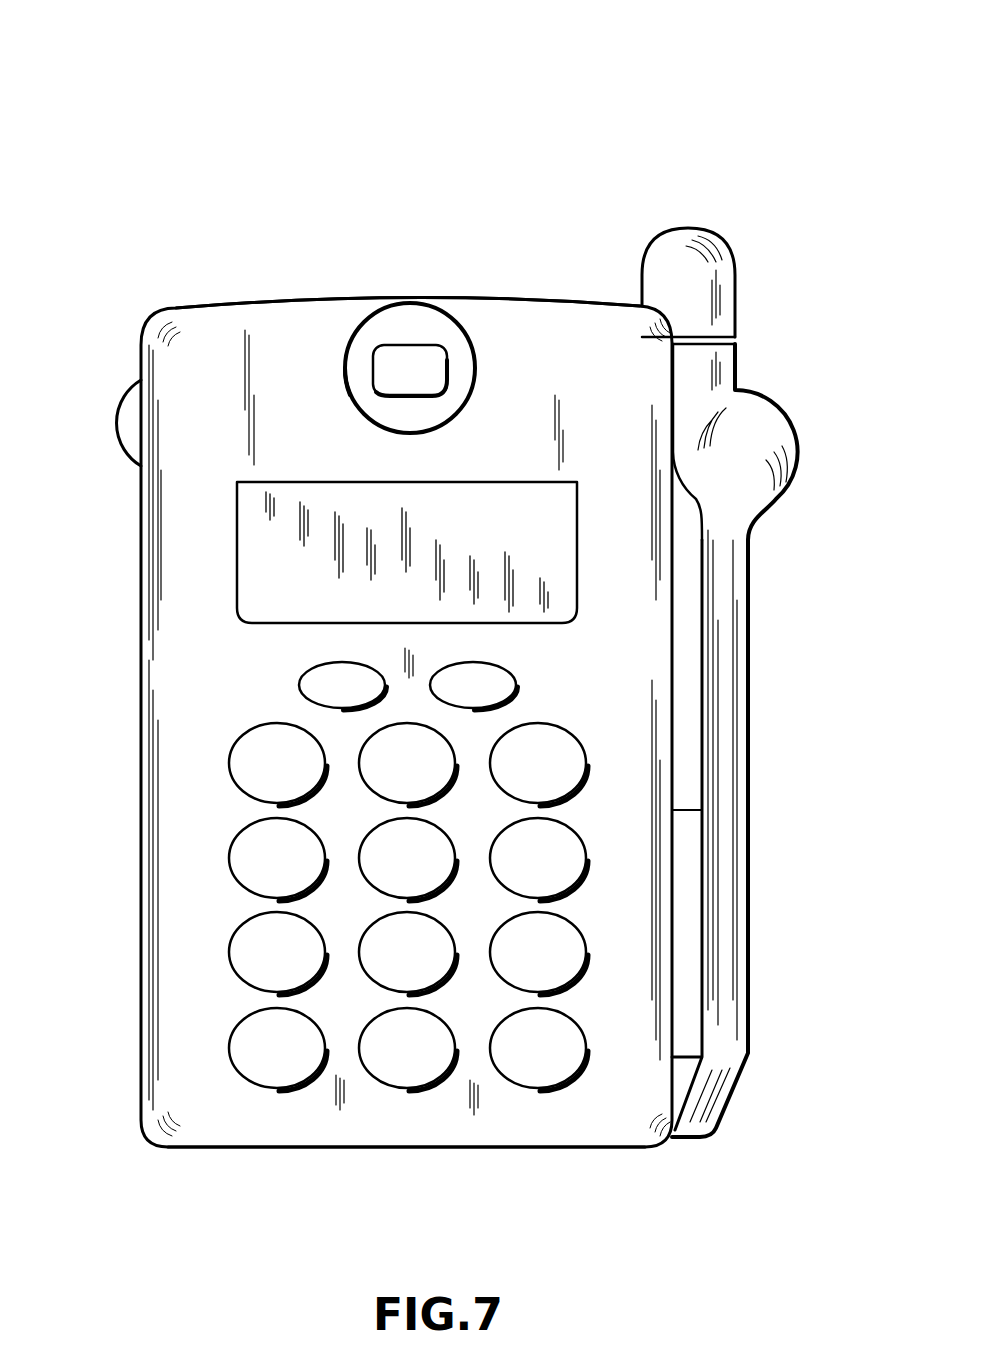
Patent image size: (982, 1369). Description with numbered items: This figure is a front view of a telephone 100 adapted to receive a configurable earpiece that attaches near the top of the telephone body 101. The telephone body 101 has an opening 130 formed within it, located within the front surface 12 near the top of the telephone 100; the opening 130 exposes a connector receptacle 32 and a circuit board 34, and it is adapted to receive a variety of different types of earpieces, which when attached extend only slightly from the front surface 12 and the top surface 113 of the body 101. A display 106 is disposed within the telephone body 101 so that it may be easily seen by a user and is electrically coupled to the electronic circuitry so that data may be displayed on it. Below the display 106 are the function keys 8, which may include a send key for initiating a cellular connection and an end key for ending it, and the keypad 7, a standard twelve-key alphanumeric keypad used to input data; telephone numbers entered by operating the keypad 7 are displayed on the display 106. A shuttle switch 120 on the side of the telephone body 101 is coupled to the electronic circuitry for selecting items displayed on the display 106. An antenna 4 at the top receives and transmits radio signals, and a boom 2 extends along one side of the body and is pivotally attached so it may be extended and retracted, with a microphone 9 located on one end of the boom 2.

The telephone 100 is at (772, 44).
The front surface 12 is at (186, 642).
The top surface 113 is at (258, 305).
The telephone body 101 is at (300, 1138).
The shuttle switch 120 is at (127, 405).
The opening 130 is at (420, 336).
The connector receptacle 32 is at (437, 375).
The circuit board 34 is at (364, 380).
The display 106 is at (349, 489).
The function keys 8 is at (323, 672).
The keypad 7 is at (122, 722).
The antenna 4 is at (666, 246).
The microphone 9 is at (773, 428).
The boom 2 is at (727, 918).